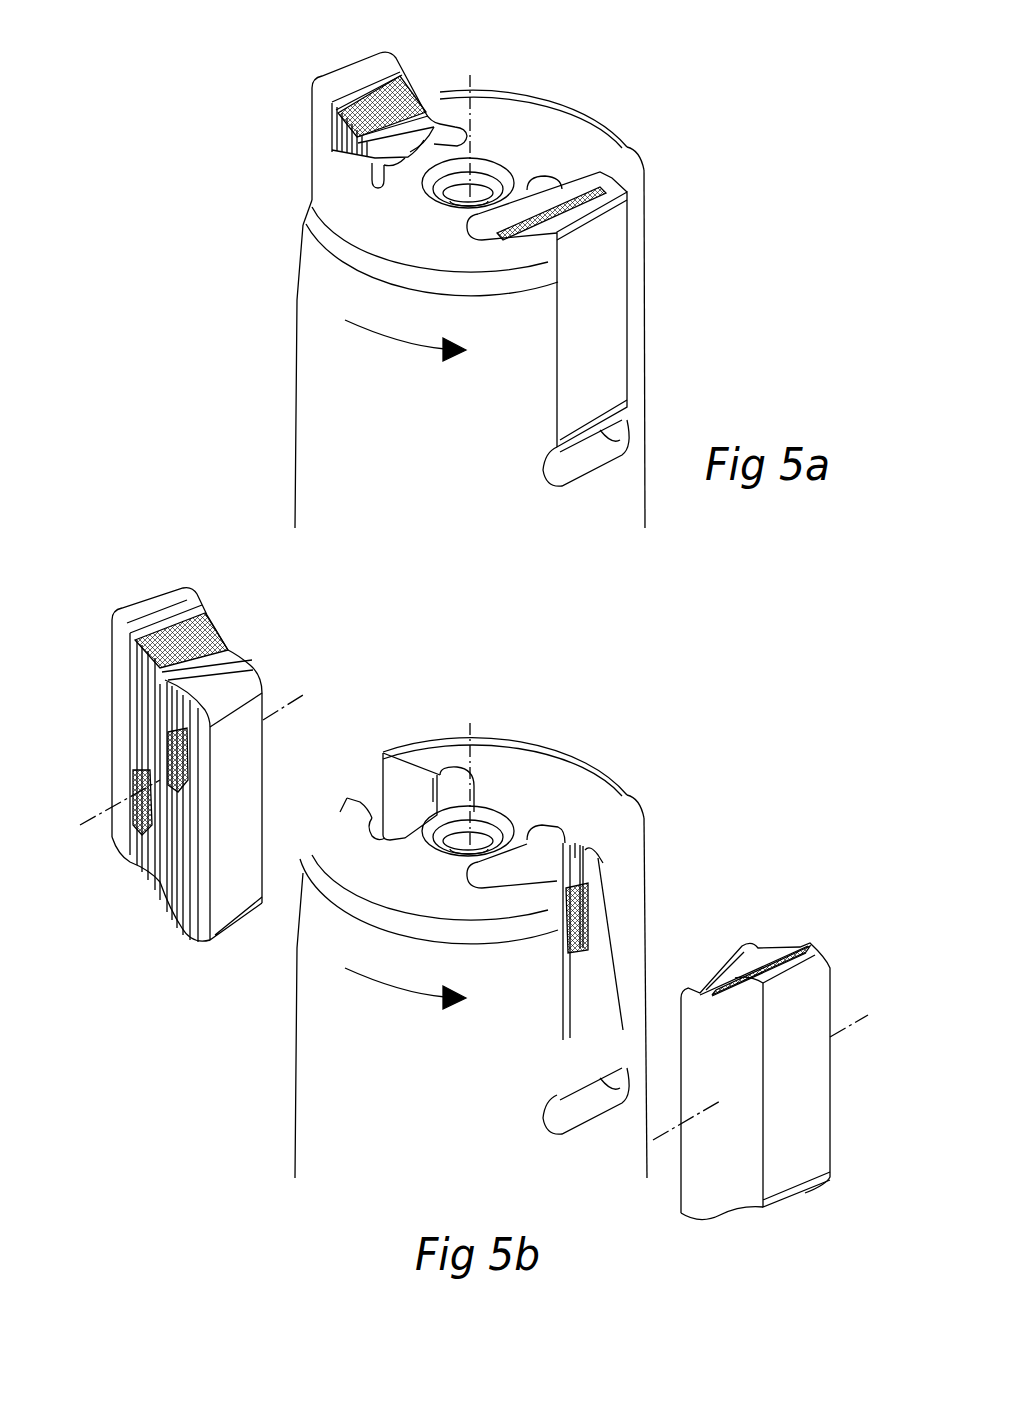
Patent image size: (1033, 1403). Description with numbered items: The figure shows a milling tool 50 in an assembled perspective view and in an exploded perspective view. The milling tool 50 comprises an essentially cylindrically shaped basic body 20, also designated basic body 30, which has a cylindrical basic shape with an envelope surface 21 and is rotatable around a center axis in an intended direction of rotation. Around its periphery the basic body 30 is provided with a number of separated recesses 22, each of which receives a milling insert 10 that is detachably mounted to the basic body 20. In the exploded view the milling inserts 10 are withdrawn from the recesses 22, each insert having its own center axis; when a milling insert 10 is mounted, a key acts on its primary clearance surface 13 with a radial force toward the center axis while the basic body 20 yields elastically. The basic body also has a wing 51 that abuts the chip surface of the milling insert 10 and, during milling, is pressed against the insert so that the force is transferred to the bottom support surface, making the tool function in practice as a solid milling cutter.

In FIG. 5A, the milling insert 10 is at (318, 103).
In FIG. 5B, the milling insert 10 is at (120, 648).
In FIG. 5A, the primary clearance surface 13 is at (610, 322).
In FIG. 5A, the basic body 20 is at (633, 150).
In FIG. 5A, the envelope surface 21 is at (330, 378).
In FIG. 5B, the envelope surface 21 is at (437, 998).
In FIG. 5B, the recess 22 is at (505, 933).
In FIG. 5B, the basic body 30 is at (613, 762).
In FIG. 5A, the milling tool 50 is at (575, 93).
In FIG. 5A, the wing 51 is at (350, 174).
In FIG. 5B, the wing 51 is at (484, 834).